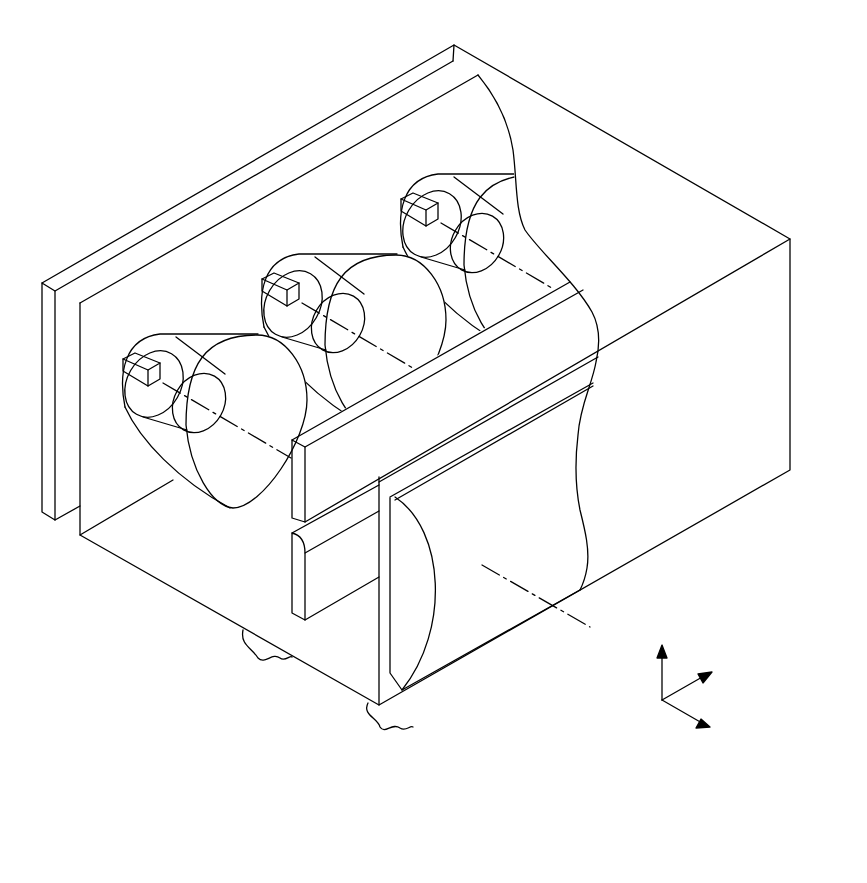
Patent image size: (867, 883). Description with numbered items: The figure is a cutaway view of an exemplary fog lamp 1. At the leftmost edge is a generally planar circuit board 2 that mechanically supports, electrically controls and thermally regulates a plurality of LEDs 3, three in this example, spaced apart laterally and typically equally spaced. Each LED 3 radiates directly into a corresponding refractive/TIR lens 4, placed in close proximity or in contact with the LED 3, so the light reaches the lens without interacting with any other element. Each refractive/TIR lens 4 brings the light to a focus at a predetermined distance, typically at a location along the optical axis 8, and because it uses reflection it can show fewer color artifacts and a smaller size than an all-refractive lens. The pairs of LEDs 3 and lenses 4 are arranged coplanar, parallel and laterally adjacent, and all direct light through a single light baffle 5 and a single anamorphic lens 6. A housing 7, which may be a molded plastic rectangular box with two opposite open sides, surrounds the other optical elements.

The fog lamp 1 is at (212, 50).
The circuit board 2 is at (173, 213).
The LED 3 is at (142, 350).
The refractive/TIR lens 4 is at (208, 348).
The light baffle 5 is at (267, 658).
The anamorphic lens 6 is at (389, 729).
The housing 7 is at (572, 142).
The optical axis 8 is at (248, 425).